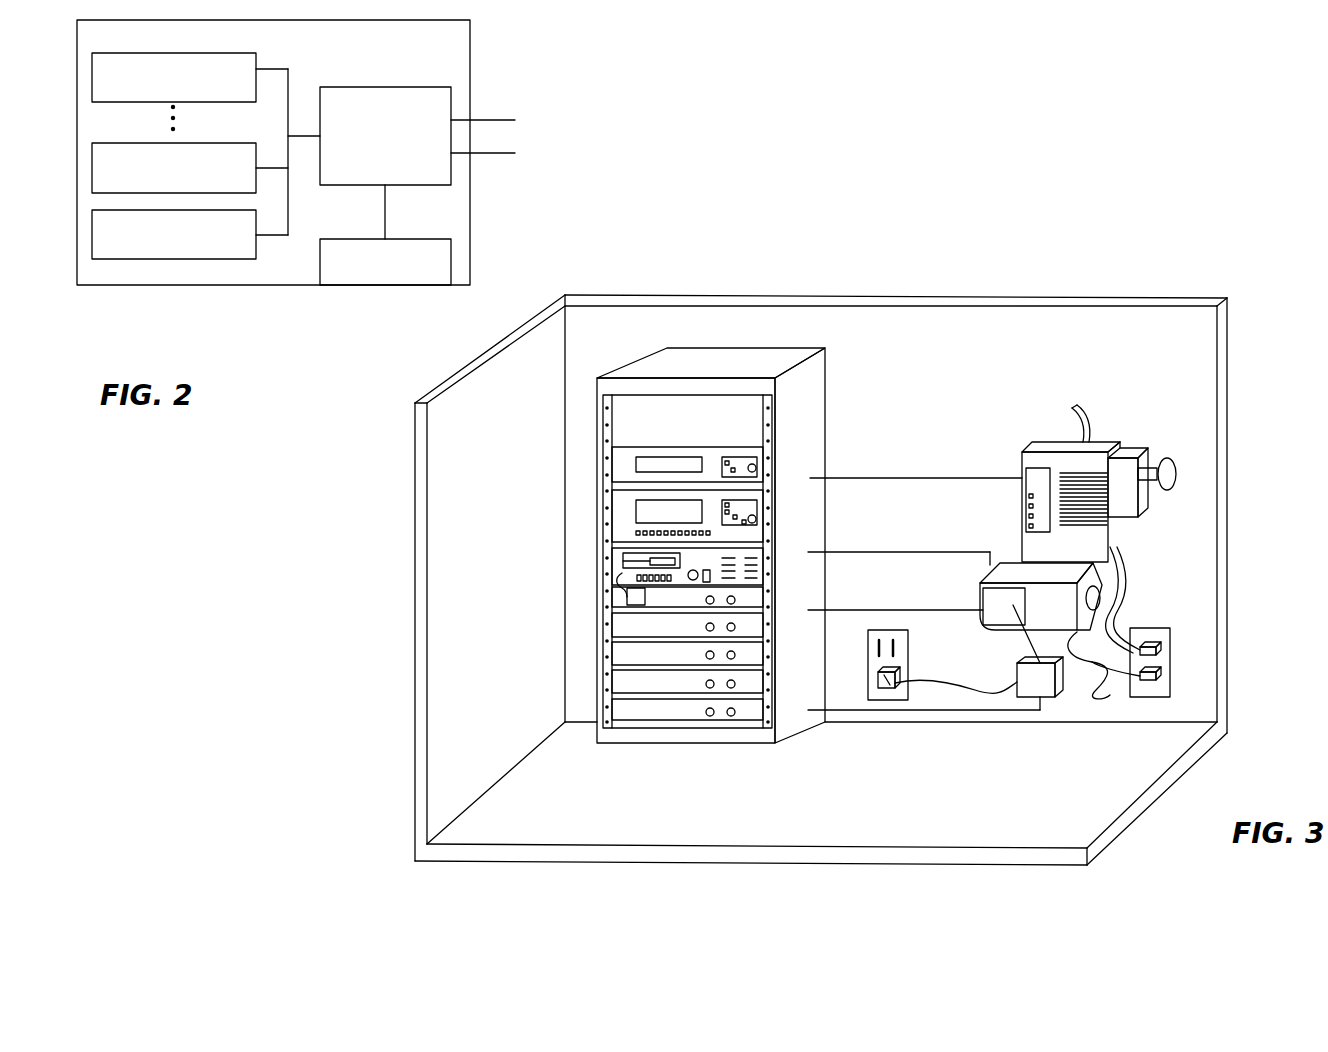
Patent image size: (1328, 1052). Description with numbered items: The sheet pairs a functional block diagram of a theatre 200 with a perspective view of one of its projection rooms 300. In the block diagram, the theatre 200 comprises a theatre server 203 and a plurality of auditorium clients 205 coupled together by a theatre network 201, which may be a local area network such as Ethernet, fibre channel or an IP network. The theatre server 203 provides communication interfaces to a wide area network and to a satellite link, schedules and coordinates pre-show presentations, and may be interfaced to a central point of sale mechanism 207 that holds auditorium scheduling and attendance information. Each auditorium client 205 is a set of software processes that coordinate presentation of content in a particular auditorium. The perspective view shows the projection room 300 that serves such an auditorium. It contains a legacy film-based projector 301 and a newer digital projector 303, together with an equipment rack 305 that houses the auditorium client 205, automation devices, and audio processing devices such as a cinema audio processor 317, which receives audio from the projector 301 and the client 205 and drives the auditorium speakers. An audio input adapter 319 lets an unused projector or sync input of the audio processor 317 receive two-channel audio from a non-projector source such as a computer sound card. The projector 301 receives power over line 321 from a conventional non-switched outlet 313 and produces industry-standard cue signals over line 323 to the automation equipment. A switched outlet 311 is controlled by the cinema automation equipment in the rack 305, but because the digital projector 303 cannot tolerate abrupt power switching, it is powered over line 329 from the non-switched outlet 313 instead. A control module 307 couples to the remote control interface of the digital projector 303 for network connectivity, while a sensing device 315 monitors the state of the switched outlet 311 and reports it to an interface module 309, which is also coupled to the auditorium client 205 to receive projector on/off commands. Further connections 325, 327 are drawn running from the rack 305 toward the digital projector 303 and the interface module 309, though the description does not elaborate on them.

In FIG. 2, the theatre 200 is at (222, 320).
In FIG. 2, the theatre network 201 is at (300, 66).
In FIG. 2, the theatre server 203 is at (352, 180).
In FIG. 2, the auditorium client 205 is at (241, 68).
In FIG. 3, the auditorium client 205 is at (622, 563).
In FIG. 2, the point of sale (POS) mechanism 207 is at (372, 275).
In FIG. 3, the projection room 300 is at (1148, 230).
In FIG. 3, the projector 301 is at (1108, 443).
In FIG. 3, the digital projector 303 is at (1008, 568).
In FIG. 3, the equipment rack 305 is at (680, 355).
In FIG. 3, the control module 307 is at (983, 598).
In FIG. 3, the interface module 309 is at (1055, 697).
In FIG. 3, the switched outlet 311 is at (907, 640).
In FIG. 3, the non-switched outlet 313 is at (1168, 652).
In FIG. 3, the sensing device 315 is at (889, 692).
In FIG. 3, the cinema audio processor 317 is at (750, 599).
In FIG. 3, the audio input adapter 319 is at (627, 599).
In FIG. 3, the line 321 is at (1127, 586).
In FIG. 3, the line 323 is at (946, 478).
In FIG. 3, the audio cable 325 is at (886, 552).
In FIG. 3, the power cable 327 is at (870, 613).
In FIG. 3, the line 329 is at (1110, 689).